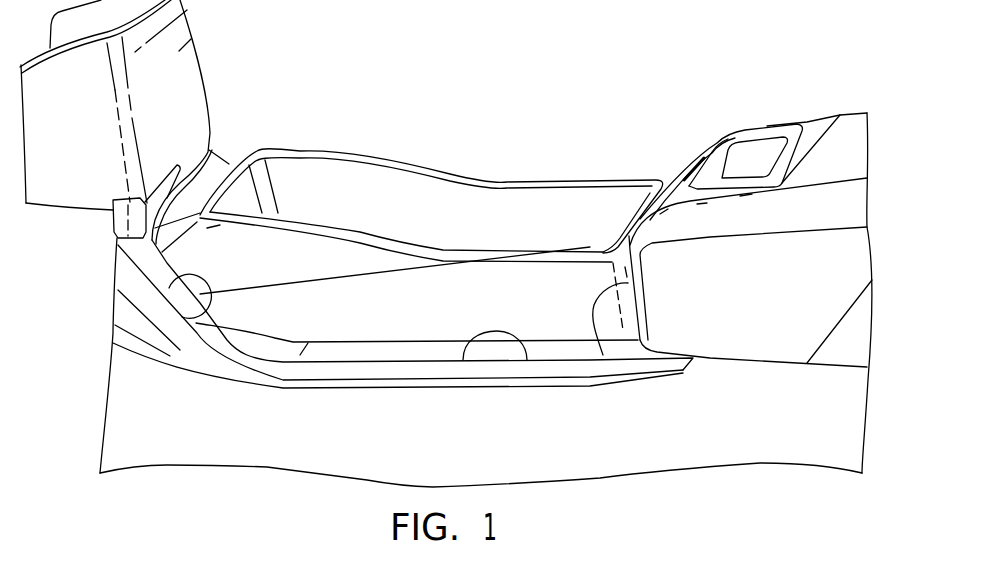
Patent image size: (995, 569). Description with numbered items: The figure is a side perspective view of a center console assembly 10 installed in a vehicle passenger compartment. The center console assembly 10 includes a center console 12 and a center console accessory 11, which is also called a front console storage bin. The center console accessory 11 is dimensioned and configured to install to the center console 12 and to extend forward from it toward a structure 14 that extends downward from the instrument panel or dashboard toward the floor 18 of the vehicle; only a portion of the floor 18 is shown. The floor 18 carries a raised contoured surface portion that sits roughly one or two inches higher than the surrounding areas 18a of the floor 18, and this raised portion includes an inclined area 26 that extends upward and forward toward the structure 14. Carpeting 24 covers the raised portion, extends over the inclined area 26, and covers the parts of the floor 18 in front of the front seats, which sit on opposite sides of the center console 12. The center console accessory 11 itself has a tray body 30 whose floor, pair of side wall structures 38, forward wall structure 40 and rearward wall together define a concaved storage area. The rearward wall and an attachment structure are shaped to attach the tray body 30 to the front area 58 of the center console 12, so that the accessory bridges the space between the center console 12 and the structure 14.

The center console assembly 10 is at (643, 52).
The center console accessory 11 is at (360, 148).
The center console 12 is at (770, 124).
The structure 14 is at (202, 50).
The floor 18 is at (463, 360).
The surrounding areas of the floor 18a is at (195, 422).
The carpeting 24 is at (732, 415).
The inclined area 26 is at (136, 335).
The tray body 30 is at (575, 178).
The side wall structures 38 is at (530, 217).
The forward wall structure 40 is at (243, 195).
The front area of the center console 58 is at (603, 355).